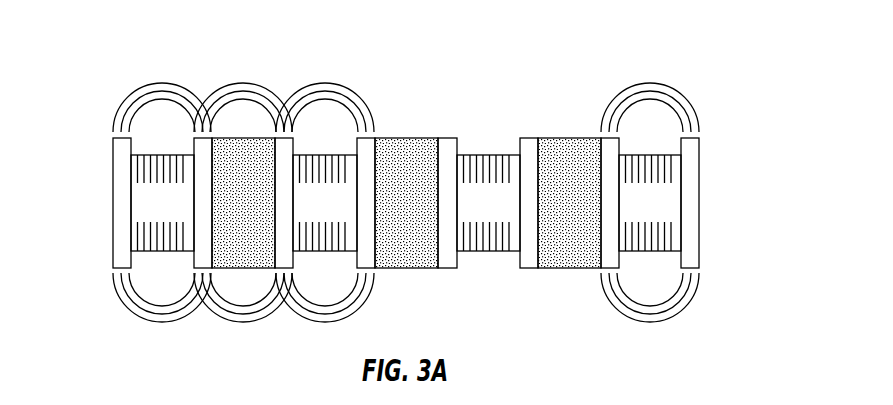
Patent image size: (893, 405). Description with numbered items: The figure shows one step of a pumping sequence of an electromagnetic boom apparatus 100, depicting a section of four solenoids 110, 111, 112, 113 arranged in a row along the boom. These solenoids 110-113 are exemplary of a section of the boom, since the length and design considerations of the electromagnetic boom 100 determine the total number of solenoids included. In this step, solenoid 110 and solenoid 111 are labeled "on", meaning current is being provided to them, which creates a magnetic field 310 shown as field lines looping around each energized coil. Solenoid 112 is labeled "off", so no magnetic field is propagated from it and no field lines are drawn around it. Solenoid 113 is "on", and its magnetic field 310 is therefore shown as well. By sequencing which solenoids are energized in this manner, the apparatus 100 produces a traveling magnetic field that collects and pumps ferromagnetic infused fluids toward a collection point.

The electromagnetic boom apparatus 100 is at (128, 50).
The solenoid 110 is at (163, 252).
The solenoid 111 is at (322, 155).
The solenoid 112 is at (480, 252).
The solenoid 113 is at (650, 252).
The magnetic field 310 is at (129, 97).